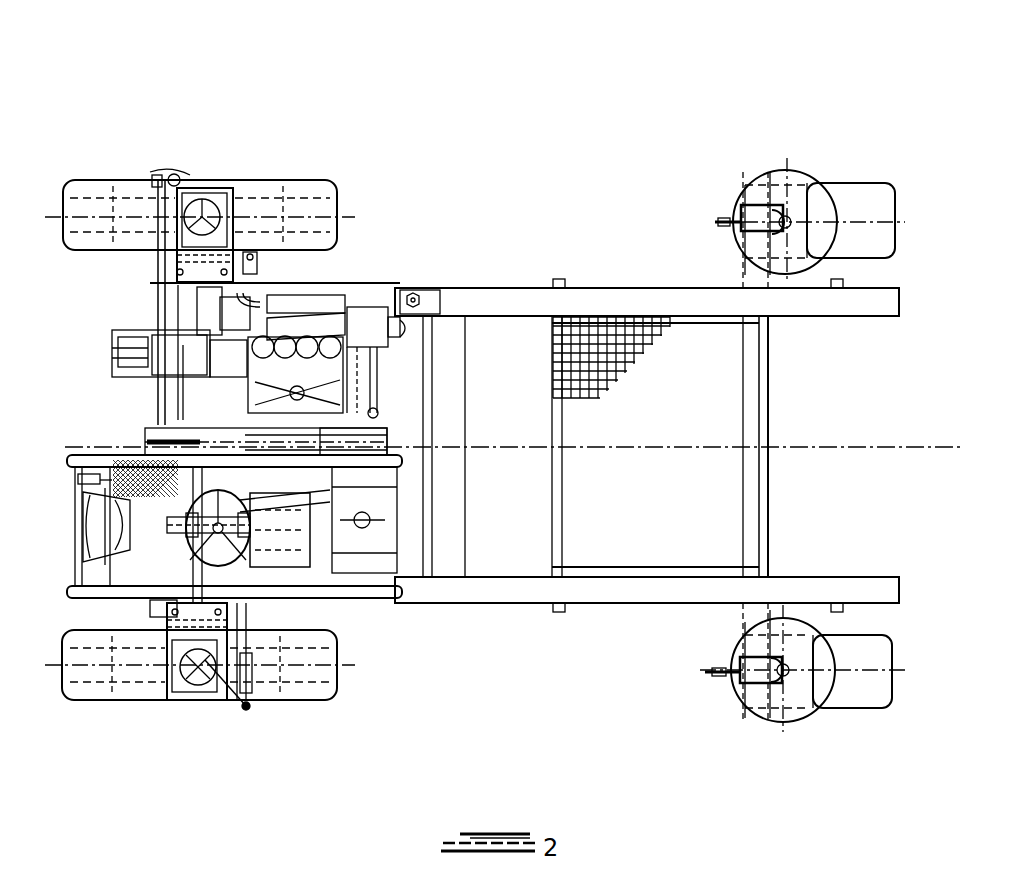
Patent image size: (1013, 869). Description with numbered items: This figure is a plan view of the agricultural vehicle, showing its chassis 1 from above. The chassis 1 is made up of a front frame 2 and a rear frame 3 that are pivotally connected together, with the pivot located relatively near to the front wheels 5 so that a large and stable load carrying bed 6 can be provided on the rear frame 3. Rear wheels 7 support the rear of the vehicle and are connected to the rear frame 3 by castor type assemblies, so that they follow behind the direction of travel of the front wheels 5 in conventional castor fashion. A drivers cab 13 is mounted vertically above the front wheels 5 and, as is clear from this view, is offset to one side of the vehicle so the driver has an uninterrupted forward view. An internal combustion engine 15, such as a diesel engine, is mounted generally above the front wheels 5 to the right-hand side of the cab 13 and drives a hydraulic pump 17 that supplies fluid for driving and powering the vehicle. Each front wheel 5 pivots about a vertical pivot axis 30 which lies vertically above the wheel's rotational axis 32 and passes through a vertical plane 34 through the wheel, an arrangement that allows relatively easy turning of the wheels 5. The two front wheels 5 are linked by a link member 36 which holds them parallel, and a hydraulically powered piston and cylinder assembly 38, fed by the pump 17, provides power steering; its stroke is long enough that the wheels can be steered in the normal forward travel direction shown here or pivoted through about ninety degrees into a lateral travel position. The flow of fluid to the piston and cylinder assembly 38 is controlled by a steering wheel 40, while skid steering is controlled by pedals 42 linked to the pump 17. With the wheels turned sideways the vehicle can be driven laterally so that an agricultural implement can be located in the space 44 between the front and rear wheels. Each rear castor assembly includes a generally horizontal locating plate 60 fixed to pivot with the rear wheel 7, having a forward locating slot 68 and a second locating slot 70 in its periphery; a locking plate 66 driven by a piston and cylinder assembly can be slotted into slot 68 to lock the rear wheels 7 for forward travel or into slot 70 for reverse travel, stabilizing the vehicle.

The chassis 1 is at (520, 610).
The front frame 2 is at (372, 292).
The rear frame 3 is at (455, 302).
The front wheels 5 is at (342, 197).
The load carrying bed 6 is at (625, 322).
The rear wheels 7 is at (863, 200).
The drivers cab 13 is at (290, 570).
The internal combustion engine 15 is at (305, 300).
The hydraulic pump 17 is at (195, 380).
The pivot axis 30 is at (205, 190).
The rotational axes 32 is at (210, 700).
The vertical plane 34 is at (130, 205).
The link member 36 is at (252, 690).
The piston and cylinder assembly 38 is at (150, 283).
The steering wheel 40 is at (180, 560).
The pedals 42 is at (83, 520).
The space 44 is at (500, 140).
The locating plate 60 is at (765, 180).
The locking plate 66 is at (722, 672).
The forward locating slot 68 is at (732, 685).
The locating slot 70 is at (822, 178).